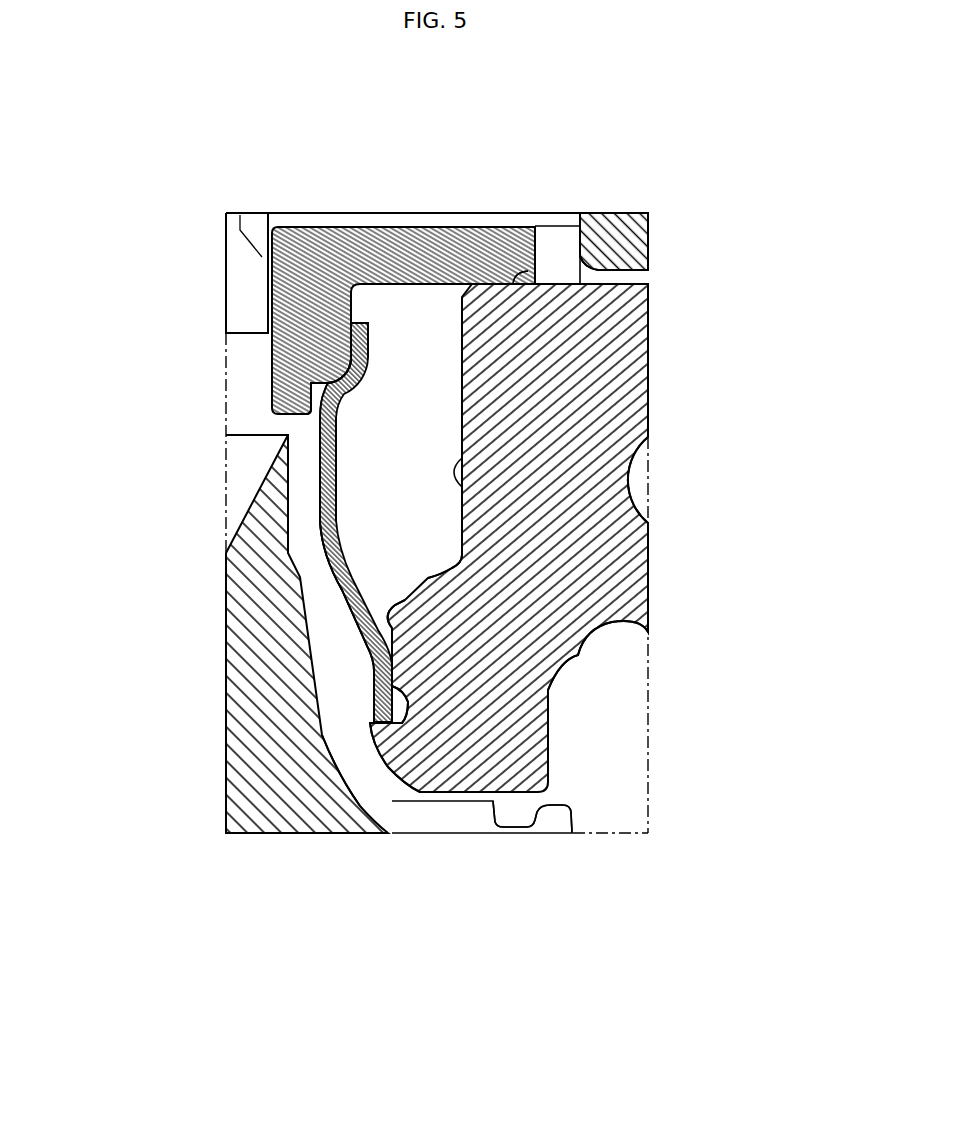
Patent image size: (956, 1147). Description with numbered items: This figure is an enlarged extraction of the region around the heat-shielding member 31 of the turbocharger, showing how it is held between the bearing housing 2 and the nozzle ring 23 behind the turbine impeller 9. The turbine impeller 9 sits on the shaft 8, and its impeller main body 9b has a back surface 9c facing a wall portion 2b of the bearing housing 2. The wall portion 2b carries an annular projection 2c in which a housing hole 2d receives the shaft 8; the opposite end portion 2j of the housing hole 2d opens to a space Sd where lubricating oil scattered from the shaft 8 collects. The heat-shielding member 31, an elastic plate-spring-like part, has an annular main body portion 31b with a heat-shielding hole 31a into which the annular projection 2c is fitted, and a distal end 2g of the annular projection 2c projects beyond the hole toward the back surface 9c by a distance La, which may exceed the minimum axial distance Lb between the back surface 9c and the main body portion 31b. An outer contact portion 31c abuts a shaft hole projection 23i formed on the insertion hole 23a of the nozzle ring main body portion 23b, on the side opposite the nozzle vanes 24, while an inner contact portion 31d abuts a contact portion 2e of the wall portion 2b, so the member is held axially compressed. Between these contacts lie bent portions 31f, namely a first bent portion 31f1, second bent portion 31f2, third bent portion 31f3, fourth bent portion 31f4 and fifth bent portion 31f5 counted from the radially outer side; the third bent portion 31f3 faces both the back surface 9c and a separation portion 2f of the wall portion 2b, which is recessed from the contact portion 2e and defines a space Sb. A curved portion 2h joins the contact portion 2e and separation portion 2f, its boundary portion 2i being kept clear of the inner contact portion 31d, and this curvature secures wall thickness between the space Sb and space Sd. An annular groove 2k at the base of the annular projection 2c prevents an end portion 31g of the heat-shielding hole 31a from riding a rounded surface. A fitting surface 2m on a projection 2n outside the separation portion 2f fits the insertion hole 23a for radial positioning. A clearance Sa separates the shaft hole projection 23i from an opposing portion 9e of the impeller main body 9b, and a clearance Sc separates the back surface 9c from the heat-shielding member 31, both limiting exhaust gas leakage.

The bearing housing 2 is at (645, 278).
The wall portion 2b is at (648, 493).
The annular projection 2c is at (384, 738).
The housing hole 2d is at (573, 834).
The contact portion 2e is at (553, 690).
The separation portion 2f is at (455, 475).
The distal end 2g is at (369, 727).
The curved portion 2h is at (440, 566).
The boundary portion 2i is at (398, 604).
The end portion 2j is at (560, 805).
The annular groove 2k is at (408, 736).
The fitting surface 2m is at (597, 282).
The projection 2n is at (533, 276).
The shaft 8 is at (482, 833).
The turbine impeller 9 is at (242, 822).
The impeller main body 9b is at (250, 805).
The back surface 9c is at (336, 753).
The opposing portion 9e is at (283, 436).
The nozzle ring 23 is at (310, 222).
The insertion hole 23a is at (416, 227).
The main body portion 23b is at (358, 227).
The shaft hole projection 23i is at (305, 414).
The nozzle vanes 24 is at (239, 230).
The heat-shielding member 31 is at (337, 442).
The heat-shielding hole 31a is at (392, 724).
The main body portion 31b is at (336, 450).
The outer contact portion 31c is at (351, 325).
The inner contact portion 31d is at (374, 702).
The bent portions 31f is at (340, 372).
The first bent portion 31f1 is at (351, 350).
The second bent portion 31f2 is at (328, 385).
The third bent portion 31f3 is at (320, 525).
The fourth bent portion 31f4 is at (318, 595).
The fifth bent portion 31f5 is at (362, 645).
The end portion 31g is at (403, 725).
The clearance Sa is at (298, 430).
The space Sb is at (414, 491).
The clearance Sc is at (300, 575).
The space Sd is at (617, 727).
The distance La is at (373, 719).
The distance Lb is at (318, 507).